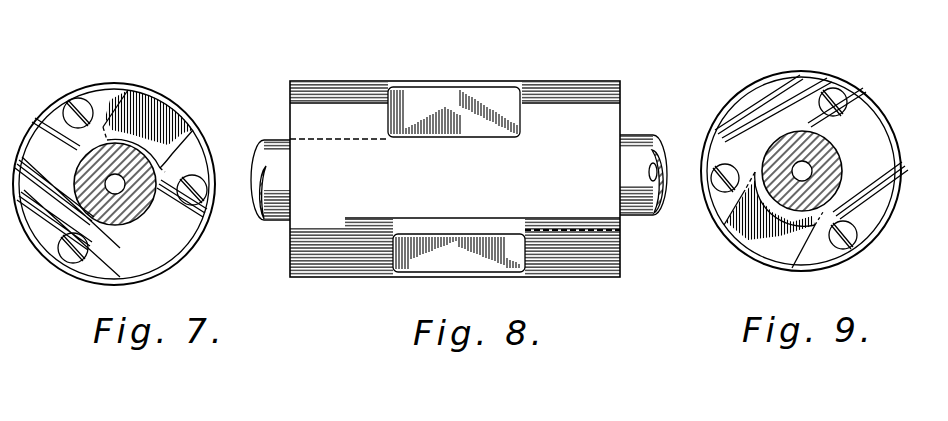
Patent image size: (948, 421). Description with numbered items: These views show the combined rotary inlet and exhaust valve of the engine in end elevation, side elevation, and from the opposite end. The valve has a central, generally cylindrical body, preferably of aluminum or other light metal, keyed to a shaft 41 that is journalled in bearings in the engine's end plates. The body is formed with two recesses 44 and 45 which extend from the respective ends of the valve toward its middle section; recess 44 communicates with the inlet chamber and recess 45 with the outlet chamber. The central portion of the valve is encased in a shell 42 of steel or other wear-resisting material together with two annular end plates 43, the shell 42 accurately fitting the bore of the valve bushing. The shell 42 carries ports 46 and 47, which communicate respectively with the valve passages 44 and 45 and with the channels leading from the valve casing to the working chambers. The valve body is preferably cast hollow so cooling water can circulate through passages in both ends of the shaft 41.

In FIG. 7, the shaft 41 is at (132, 215).
In FIG. 8, the shaft 41 is at (265, 140).
In FIG. 9, the shaft 41 is at (837, 167).
In FIG. 7, the shell 42 is at (195, 245).
In FIG. 9, the shell 42 is at (790, 75).
In FIG. 9, the annular end plates 43 is at (860, 128).
In FIG. 7, the recess 44 is at (145, 115).
In FIG. 9, the recess 45 is at (768, 247).
In FIG. 8, the port 46 is at (487, 85).
In FIG. 8, the port 47 is at (573, 81).